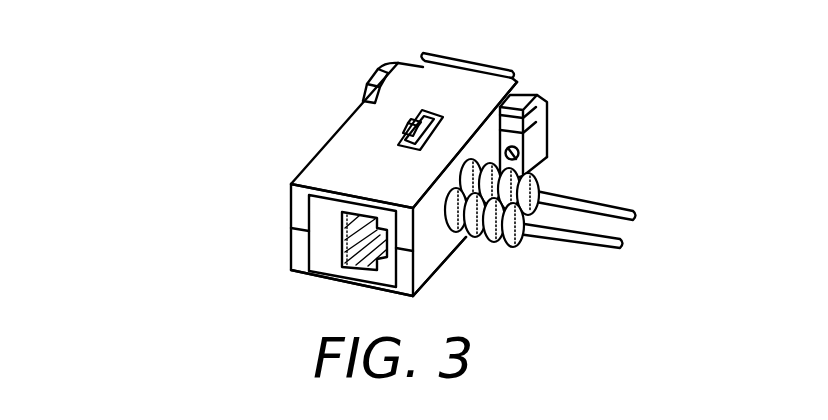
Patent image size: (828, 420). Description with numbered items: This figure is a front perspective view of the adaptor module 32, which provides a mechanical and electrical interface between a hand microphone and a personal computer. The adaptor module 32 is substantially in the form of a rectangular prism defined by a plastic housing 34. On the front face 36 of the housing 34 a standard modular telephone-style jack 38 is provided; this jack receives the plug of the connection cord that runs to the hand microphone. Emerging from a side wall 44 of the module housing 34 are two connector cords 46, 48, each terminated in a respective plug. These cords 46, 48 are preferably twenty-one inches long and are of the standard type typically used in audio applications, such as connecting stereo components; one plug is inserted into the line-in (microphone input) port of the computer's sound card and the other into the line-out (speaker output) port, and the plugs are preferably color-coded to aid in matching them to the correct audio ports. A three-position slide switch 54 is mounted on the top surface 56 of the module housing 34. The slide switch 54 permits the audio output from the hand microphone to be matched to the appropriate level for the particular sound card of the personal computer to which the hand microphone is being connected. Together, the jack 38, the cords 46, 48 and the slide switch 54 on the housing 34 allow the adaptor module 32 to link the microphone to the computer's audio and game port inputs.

The adaptor module 32 is at (288, 112).
The housing 34 is at (497, 88).
The front face 36 is at (291, 259).
The RJ-14 jack 38 is at (349, 280).
The side wall 44 is at (441, 272).
The connector cord 46 is at (579, 198).
The connector cord 48 is at (563, 245).
The slide switch 54 is at (421, 104).
The top surface 56 is at (285, 189).